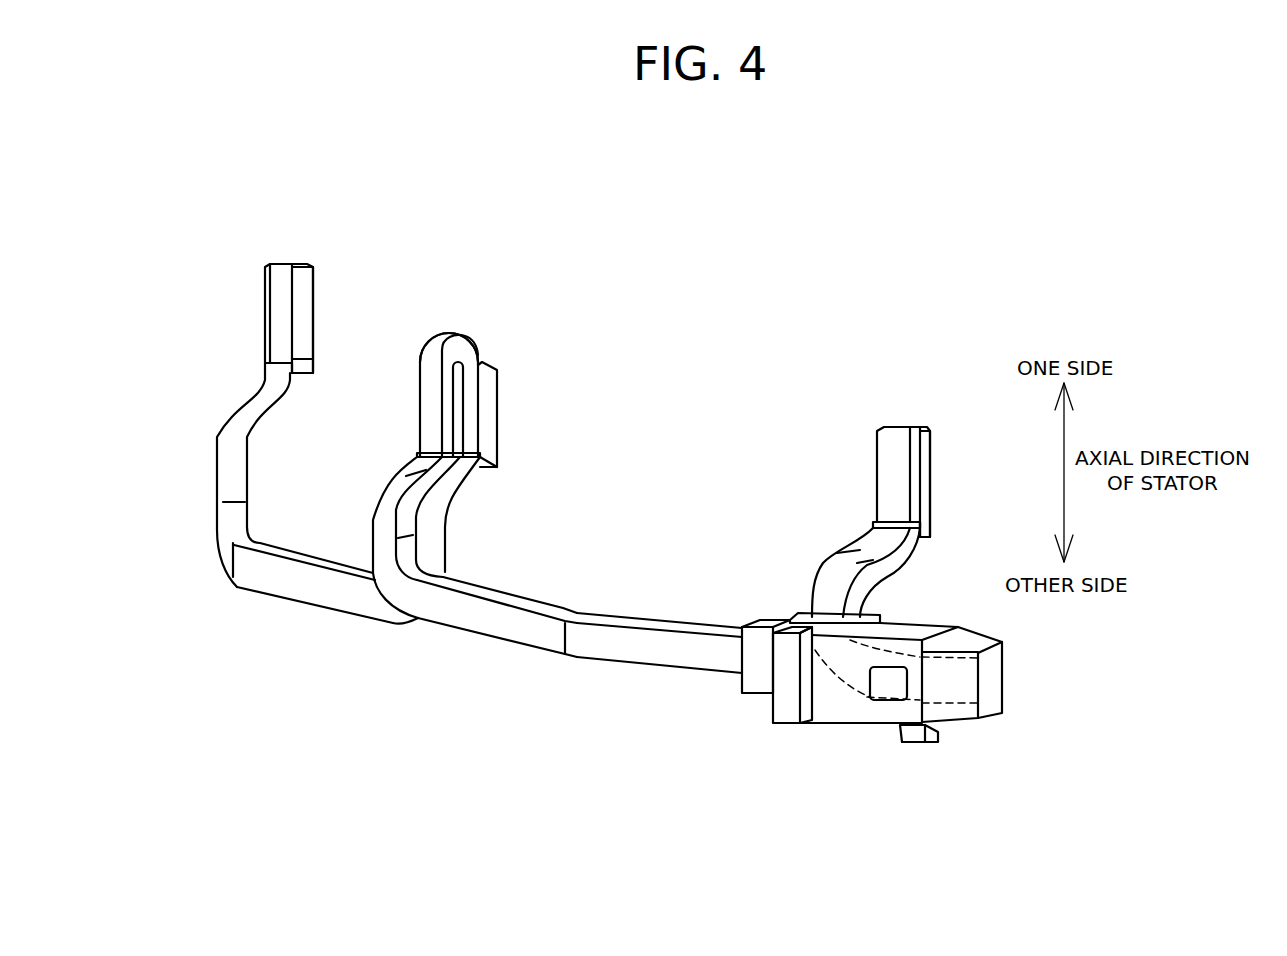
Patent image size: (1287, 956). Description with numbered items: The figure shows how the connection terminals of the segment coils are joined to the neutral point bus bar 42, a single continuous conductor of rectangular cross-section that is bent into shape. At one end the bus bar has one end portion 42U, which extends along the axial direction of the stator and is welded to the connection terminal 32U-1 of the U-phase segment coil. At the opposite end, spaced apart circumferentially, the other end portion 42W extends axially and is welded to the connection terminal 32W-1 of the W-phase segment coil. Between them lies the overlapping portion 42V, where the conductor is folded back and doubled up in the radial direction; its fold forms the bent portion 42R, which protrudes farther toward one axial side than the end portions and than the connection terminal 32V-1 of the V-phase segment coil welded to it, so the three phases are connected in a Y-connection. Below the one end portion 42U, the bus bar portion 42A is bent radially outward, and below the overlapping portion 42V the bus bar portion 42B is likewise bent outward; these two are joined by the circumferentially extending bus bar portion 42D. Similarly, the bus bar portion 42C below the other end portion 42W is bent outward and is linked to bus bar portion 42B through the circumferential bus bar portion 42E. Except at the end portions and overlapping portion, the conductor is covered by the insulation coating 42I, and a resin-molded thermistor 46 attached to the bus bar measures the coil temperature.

The neutral point bus bar 42 is at (487, 673).
The one end portion 42U is at (282, 295).
The connection terminal 32U-1 is at (303, 298).
The bent portion 42R is at (462, 350).
The overlapping portion 42V is at (468, 412).
The connection terminal 32V-1 is at (487, 402).
The bus bar portion 42A is at (235, 452).
The bus bar portion 42B is at (435, 545).
The bus bar portion 42C is at (825, 582).
The other end portion 42W is at (897, 480).
The connection terminal 32W-1 is at (927, 457).
The bus bar portion 42D is at (255, 578).
The bus bar portion 42E is at (535, 637).
The insulation coating 42I is at (640, 647).
The thermistor 46 is at (760, 675).